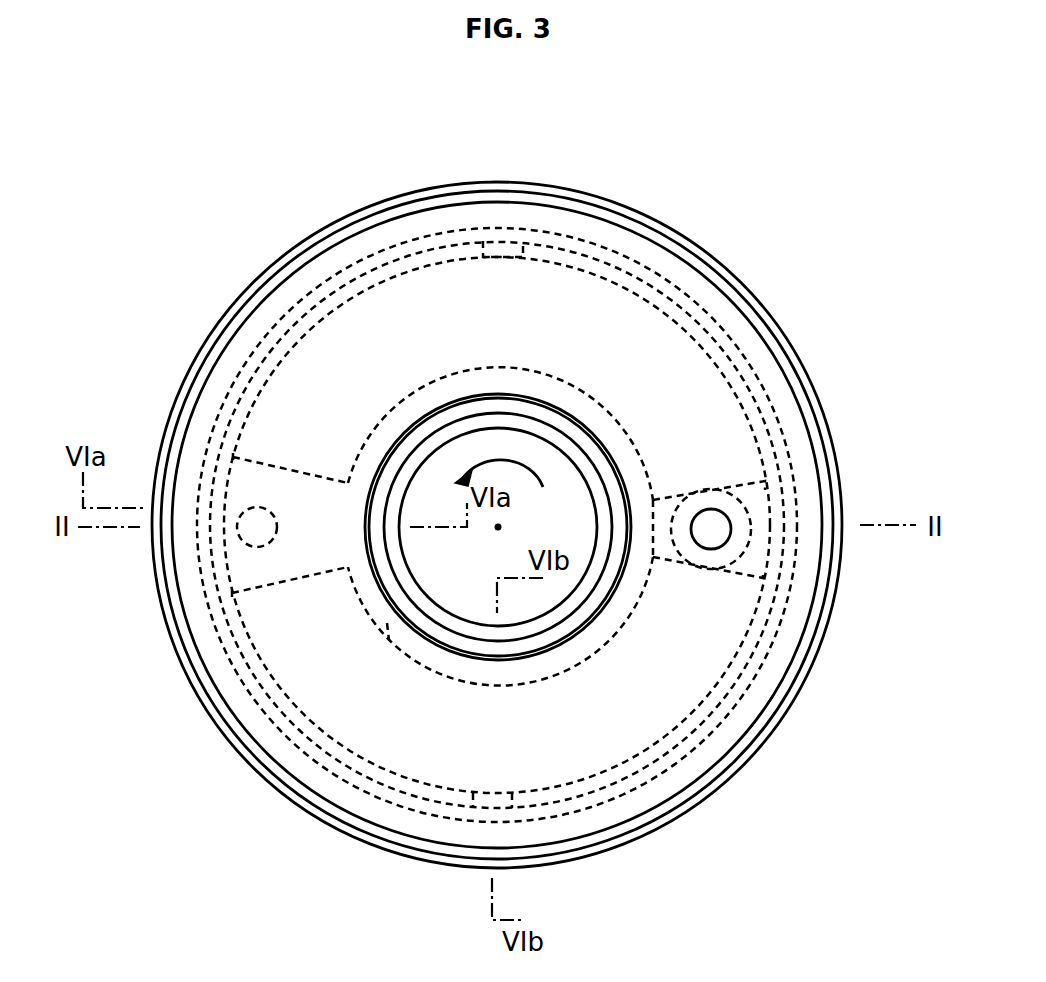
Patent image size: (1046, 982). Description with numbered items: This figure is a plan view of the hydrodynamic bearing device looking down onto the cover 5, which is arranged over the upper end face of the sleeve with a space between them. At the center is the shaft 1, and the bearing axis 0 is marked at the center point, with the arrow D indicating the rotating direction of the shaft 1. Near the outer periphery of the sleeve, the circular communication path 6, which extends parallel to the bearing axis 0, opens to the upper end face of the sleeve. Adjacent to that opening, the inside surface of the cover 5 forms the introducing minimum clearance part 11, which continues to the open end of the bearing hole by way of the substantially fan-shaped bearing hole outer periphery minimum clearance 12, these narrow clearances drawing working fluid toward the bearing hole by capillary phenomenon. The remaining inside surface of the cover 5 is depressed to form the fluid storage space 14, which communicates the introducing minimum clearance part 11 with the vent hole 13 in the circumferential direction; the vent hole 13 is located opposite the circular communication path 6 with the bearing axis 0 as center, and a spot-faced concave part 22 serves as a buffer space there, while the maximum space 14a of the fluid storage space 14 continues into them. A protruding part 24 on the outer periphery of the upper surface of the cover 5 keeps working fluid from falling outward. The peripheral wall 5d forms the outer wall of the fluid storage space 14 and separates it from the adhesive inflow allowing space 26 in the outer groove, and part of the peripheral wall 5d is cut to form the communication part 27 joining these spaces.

The shaft 1 is at (437, 495).
The cover 5 is at (353, 247).
The peripheral wall 5d is at (708, 712).
The circular communication path 6 is at (250, 521).
The introducing minimum clearance part 11 is at (290, 560).
The bearing hole outer periphery minimum clearance 12 is at (387, 623).
The vent hole 13 is at (723, 530).
The fluid storage space 14 is at (287, 402).
The maximum space 14a is at (766, 498).
The concave part 22 is at (730, 573).
The protruding part 24 is at (428, 207).
The adhesive inflow allowing space 26 is at (650, 778).
The communication part 27 is at (505, 255).
The bearing axis 0 is at (498, 528).
The rotating direction D is at (499, 463).